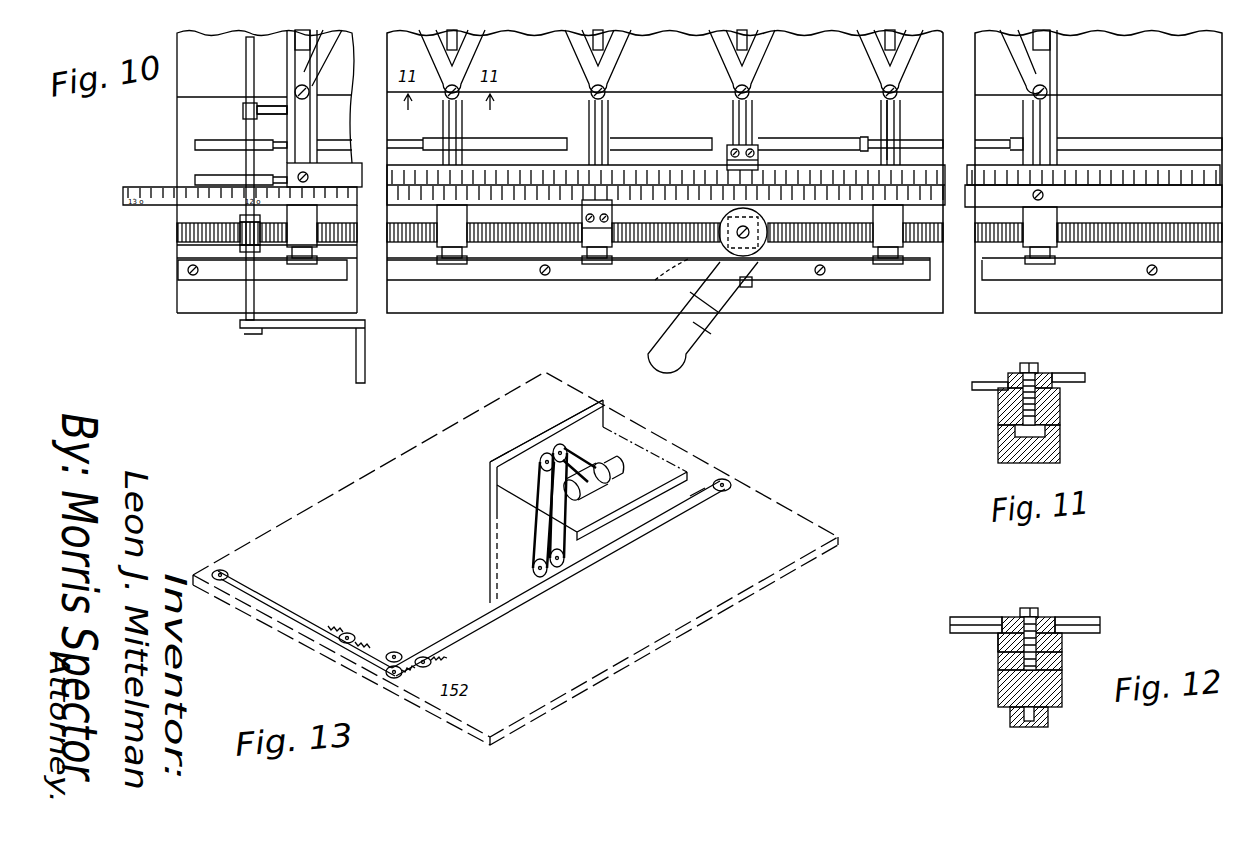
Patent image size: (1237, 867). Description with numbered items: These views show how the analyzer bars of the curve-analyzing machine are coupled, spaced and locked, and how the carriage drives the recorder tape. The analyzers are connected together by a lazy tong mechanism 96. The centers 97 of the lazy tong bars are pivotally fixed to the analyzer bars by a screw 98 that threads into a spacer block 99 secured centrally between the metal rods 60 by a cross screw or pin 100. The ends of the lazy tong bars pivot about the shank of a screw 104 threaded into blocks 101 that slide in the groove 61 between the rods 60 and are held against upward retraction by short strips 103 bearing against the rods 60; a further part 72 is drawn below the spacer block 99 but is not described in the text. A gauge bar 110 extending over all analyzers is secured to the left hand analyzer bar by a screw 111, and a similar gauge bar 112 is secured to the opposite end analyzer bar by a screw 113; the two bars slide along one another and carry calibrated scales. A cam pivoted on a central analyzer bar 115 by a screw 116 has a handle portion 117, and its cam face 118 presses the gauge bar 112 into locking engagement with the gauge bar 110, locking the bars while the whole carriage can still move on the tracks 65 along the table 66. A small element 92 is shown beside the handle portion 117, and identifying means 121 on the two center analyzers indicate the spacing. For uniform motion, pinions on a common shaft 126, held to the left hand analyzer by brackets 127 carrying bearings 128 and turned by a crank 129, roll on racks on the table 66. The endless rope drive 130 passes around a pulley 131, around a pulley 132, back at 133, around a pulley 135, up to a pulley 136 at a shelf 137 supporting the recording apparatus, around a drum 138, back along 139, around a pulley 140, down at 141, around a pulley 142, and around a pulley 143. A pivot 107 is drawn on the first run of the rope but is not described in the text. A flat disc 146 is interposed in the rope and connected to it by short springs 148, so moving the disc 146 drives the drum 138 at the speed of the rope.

In FIG. 10, the metal rods 60 is at (1023, 110).
In FIG. 11, the metal rods 60 is at (998, 400).
In FIG. 12, the metal rods 60 is at (1062, 637).
In FIG. 10, the groove 61 is at (888, 126).
In FIG. 10, the tracks 65 is at (1140, 262).
In FIG. 10, the table 66 is at (892, 304).
In FIG. 13, the table 66 is at (612, 655).
In FIG. 12, the boss 72 is at (1050, 722).
In FIG. 10, the stop block 92 is at (752, 288).
In FIG. 10, the lazy tong mechanism 96 is at (712, 66).
In FIG. 11, the lazy tong mechanism 96 is at (1068, 373).
In FIG. 12, the lazy tong mechanism 96 is at (982, 617).
In FIG. 12, the centers of the lazy tong bars 97 is at (1050, 617).
In FIG. 12, the screw 98 is at (1038, 612).
In FIG. 12, the spacer block 99 is at (1062, 660).
In FIG. 12, the cross screw or pin 100 is at (998, 640).
In FIG. 13, the cross screw or pin 100 is at (220, 575).
In FIG. 10, the blocks 101 is at (888, 110).
In FIG. 11, the blocks 101 is at (1060, 408).
In FIG. 11, the short strips 103 is at (998, 432).
In FIG. 11, the screw 104 is at (1030, 366).
In FIG. 10, the pivot 107 is at (738, 104).
In FIG. 13, the pivot 107 is at (350, 632).
In FIG. 10, the gauge bar 110 is at (728, 175).
In FIG. 10, the screw 111 is at (303, 177).
In FIG. 10, the gauge bar 112 is at (385, 212).
In FIG. 10, the screw 113 is at (1044, 195).
In FIG. 10, the central analyzer bar 115 is at (712, 268).
In FIG. 10, the screw 116 is at (750, 250).
In FIG. 10, the handle portion 117 is at (728, 342).
In FIG. 10, the cam face 118 is at (768, 222).
In FIG. 10, the identifying means 121 is at (587, 222).
In FIG. 10, the shaft 126 is at (246, 64).
In FIG. 10, the brackets 127 is at (272, 110).
In FIG. 10, the bearings 128 is at (240, 110).
In FIG. 10, the crank 129 is at (290, 325).
In FIG. 13, the endless rope drive 130 is at (565, 590).
In FIG. 13, the pulley 131 is at (392, 676).
In FIG. 13, the pulley 132 is at (735, 480).
In FIG. 13, the return run of rope drive 133 is at (700, 490).
In FIG. 13, the pulley 135 is at (566, 560).
In FIG. 13, the pulley 136 is at (558, 446).
In FIG. 13, the shelf 137 is at (600, 462).
In FIG. 13, the drum 138 is at (618, 470).
In FIG. 13, the return run of rope drive 139 is at (560, 492).
In FIG. 13, the pulley 140 is at (540, 452).
In FIG. 13, the downward run of rope drive 141 is at (556, 518).
In FIG. 13, the pulley 142 is at (545, 560).
In FIG. 13, the pulley 143 is at (400, 652).
In FIG. 13, the flat disc 146 is at (432, 662).
In FIG. 13, the short springs 148 is at (452, 652).